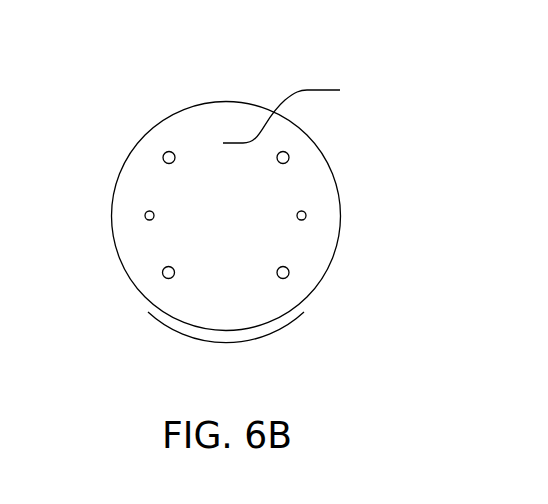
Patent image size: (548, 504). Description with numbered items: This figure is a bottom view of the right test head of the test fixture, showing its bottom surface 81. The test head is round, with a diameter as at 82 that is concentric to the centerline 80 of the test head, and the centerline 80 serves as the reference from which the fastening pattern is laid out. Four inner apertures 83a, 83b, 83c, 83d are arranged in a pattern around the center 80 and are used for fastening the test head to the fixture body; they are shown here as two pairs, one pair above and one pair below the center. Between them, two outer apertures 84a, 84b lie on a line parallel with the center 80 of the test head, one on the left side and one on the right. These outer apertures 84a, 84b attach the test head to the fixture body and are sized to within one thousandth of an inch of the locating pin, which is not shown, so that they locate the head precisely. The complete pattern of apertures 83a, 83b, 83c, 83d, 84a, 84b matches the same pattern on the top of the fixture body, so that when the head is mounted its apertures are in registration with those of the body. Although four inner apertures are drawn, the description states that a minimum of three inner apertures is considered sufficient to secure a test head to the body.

The centerline 80 is at (225, 215).
The bottom surface 81 is at (297, 108).
The diameter 82 is at (277, 322).
The aperture 83a is at (162, 153).
The aperture 83b is at (290, 153).
The aperture 83c is at (162, 276).
The aperture 83d is at (289, 277).
The outer aperture 84a is at (146, 218).
The outer aperture 84b is at (306, 220).